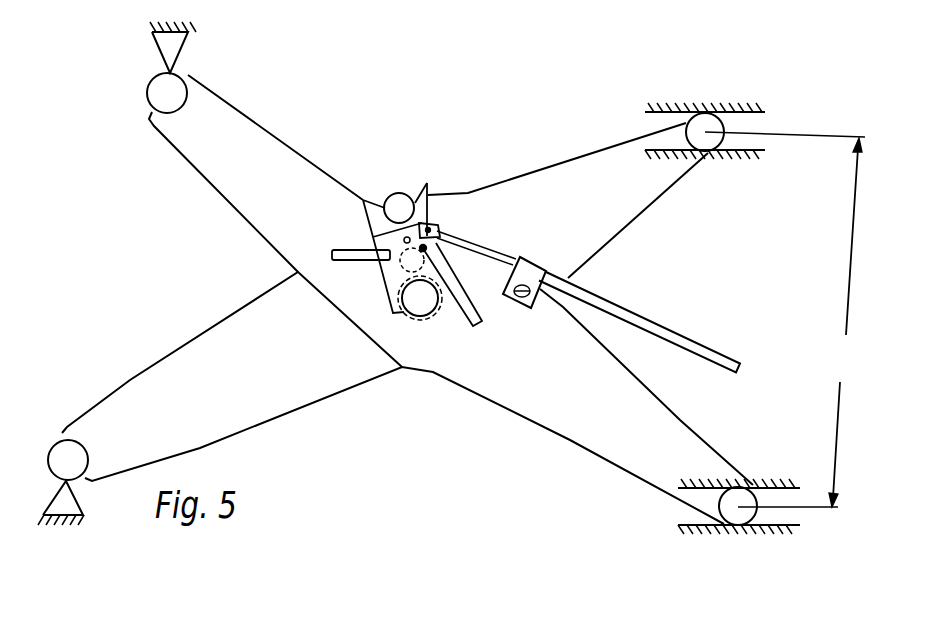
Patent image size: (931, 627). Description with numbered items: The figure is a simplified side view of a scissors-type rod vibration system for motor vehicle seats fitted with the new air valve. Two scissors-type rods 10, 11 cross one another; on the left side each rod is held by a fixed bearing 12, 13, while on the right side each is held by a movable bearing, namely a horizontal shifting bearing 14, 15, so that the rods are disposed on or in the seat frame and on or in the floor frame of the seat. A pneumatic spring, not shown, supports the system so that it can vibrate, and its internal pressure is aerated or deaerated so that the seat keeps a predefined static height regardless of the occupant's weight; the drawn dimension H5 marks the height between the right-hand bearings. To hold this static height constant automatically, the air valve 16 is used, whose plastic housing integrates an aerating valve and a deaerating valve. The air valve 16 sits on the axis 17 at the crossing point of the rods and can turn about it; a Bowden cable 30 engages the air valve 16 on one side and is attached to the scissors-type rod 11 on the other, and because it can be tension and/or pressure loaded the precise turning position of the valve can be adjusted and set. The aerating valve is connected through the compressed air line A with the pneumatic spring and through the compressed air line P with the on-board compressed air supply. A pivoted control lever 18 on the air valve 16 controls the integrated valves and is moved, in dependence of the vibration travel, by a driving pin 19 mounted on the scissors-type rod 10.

The scissors-type rod 10 is at (536, 197).
The scissors-type rod 11 is at (529, 396).
The fixed bearing 12 is at (211, 64).
The fixed bearing 13 is at (113, 520).
The horizontal shifting bearing 14 is at (640, 124).
The horizontal shifting bearing 15 is at (668, 515).
The air valve 16 is at (393, 280).
The axis 17 is at (428, 320).
The control lever 18 is at (428, 210).
The driving pin 19 is at (400, 212).
The Bowden cable 30 is at (612, 309).
The compressed air line P is at (348, 257).
The compressed air line A is at (461, 294).
The height H5 is at (785, 319).